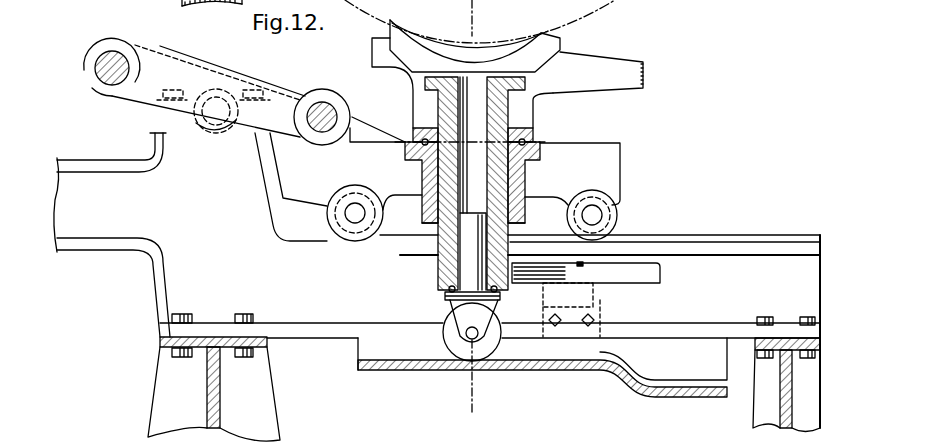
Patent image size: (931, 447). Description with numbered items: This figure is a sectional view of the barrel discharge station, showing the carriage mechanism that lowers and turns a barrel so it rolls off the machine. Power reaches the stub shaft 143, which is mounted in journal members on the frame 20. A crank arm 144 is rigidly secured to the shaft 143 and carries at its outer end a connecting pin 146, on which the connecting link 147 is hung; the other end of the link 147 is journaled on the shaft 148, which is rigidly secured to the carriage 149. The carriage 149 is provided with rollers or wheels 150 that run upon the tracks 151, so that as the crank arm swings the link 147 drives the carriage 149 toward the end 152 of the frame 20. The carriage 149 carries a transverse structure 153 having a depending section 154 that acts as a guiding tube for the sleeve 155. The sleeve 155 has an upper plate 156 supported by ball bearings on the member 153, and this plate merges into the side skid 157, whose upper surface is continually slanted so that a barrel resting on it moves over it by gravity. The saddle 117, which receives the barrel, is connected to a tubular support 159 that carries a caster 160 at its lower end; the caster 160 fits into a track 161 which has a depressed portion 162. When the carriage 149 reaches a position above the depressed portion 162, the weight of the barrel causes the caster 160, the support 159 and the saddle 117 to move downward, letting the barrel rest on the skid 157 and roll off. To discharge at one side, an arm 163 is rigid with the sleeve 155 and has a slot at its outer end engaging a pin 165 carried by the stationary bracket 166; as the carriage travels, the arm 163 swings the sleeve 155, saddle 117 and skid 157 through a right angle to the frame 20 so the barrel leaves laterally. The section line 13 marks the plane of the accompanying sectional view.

The line 13— 13 is at (466, 10).
The frame 20 is at (238, 235).
The saddle 117 is at (548, 47).
The stub shaft 143 is at (219, 126).
The crank arm 144 is at (181, 132).
The connecting pin 146 is at (108, 80).
The connecting link 147 is at (223, 80).
The shaft 148 is at (325, 110).
The carriage 149 is at (360, 153).
The rollers or wheels 150 is at (357, 244).
The tracks 151 is at (705, 235).
The end of frame 152 is at (818, 236).
The transverse structure 153 is at (531, 160).
The depending section 154 is at (518, 173).
The sleeve 155 is at (489, 220).
The upper plate 156 is at (535, 137).
The skid 157 is at (643, 70).
The tubular support 159 is at (497, 104).
The caster 160 is at (450, 323).
The track 161 is at (505, 366).
The depressed portion 162 is at (675, 397).
The arm 163 is at (586, 273).
The pin 165 is at (582, 264).
The stationary bracket 166 is at (598, 300).